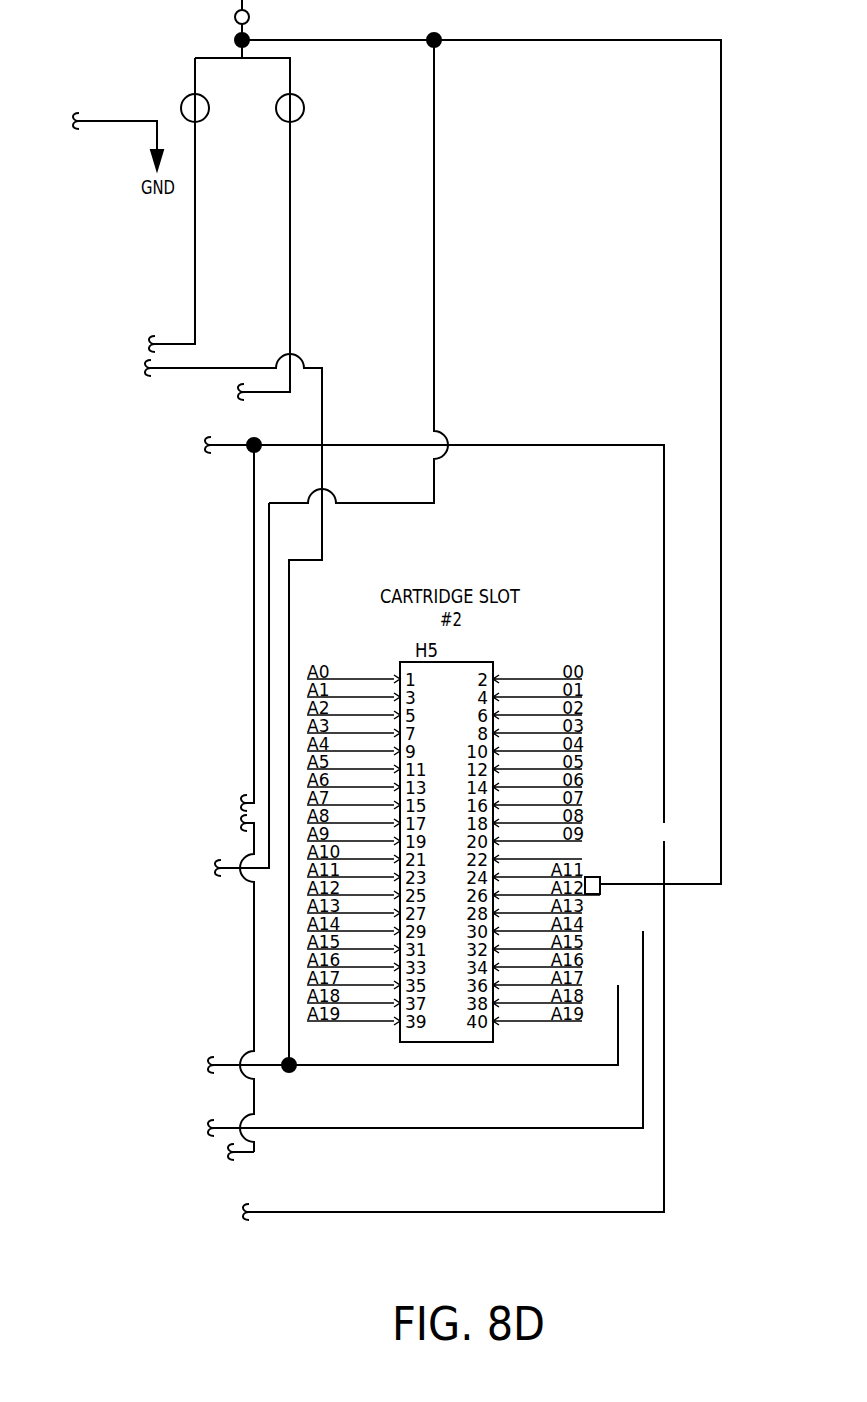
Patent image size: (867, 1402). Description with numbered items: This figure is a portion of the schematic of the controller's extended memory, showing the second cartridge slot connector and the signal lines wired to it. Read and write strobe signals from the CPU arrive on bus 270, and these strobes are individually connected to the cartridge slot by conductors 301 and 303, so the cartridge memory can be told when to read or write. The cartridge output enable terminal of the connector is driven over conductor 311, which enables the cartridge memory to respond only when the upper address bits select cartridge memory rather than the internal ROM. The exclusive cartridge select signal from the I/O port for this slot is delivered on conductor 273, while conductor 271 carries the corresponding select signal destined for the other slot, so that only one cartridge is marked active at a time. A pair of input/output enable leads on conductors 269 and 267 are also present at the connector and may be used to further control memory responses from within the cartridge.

The bus 270 is at (249, 16).
The conductor 301 is at (183, 100).
The conductor 303 is at (304, 108).
The conductor 311 is at (254, 598).
The conductor 269 is at (329, 1067).
The conductor 267 is at (351, 1130).
The conductor 271 is at (245, 1152).
The conductor 273 is at (291, 1212).